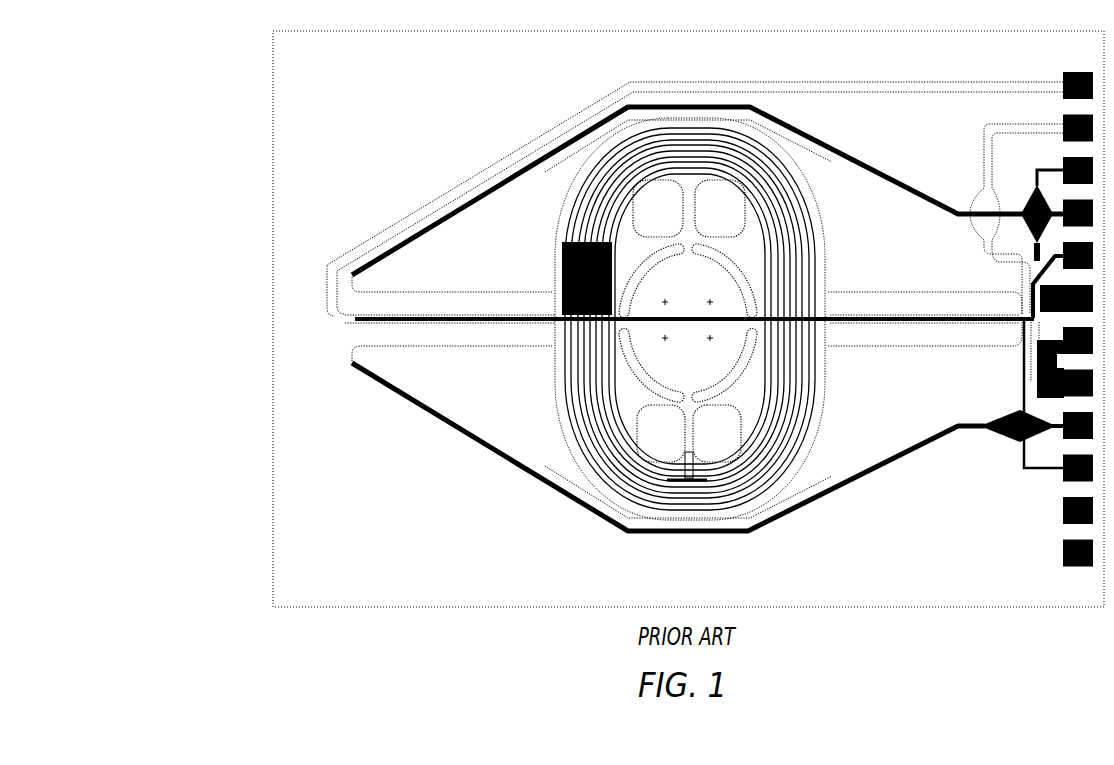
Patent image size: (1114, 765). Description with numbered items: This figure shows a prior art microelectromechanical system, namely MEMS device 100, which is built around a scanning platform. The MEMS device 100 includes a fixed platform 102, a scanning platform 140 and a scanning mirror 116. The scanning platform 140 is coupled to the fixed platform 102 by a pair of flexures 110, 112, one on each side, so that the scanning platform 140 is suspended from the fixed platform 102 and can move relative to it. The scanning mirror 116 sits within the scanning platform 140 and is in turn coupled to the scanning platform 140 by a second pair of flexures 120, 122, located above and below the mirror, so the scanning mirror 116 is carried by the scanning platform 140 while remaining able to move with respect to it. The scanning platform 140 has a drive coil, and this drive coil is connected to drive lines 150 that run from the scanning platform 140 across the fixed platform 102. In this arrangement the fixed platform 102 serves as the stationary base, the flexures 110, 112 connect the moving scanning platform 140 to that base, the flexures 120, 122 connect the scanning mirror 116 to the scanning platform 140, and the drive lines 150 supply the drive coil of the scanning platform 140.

The MEMS device 100 is at (233, 606).
The fixed platform 102 is at (388, 116).
The flexure 110 is at (434, 318).
The flexure 112 is at (890, 318).
The scanning mirror 116 is at (703, 325).
The flexure 120 is at (697, 192).
The flexure 122 is at (698, 449).
The scanning platform 140 is at (803, 425).
The drive lines 150 is at (887, 92).